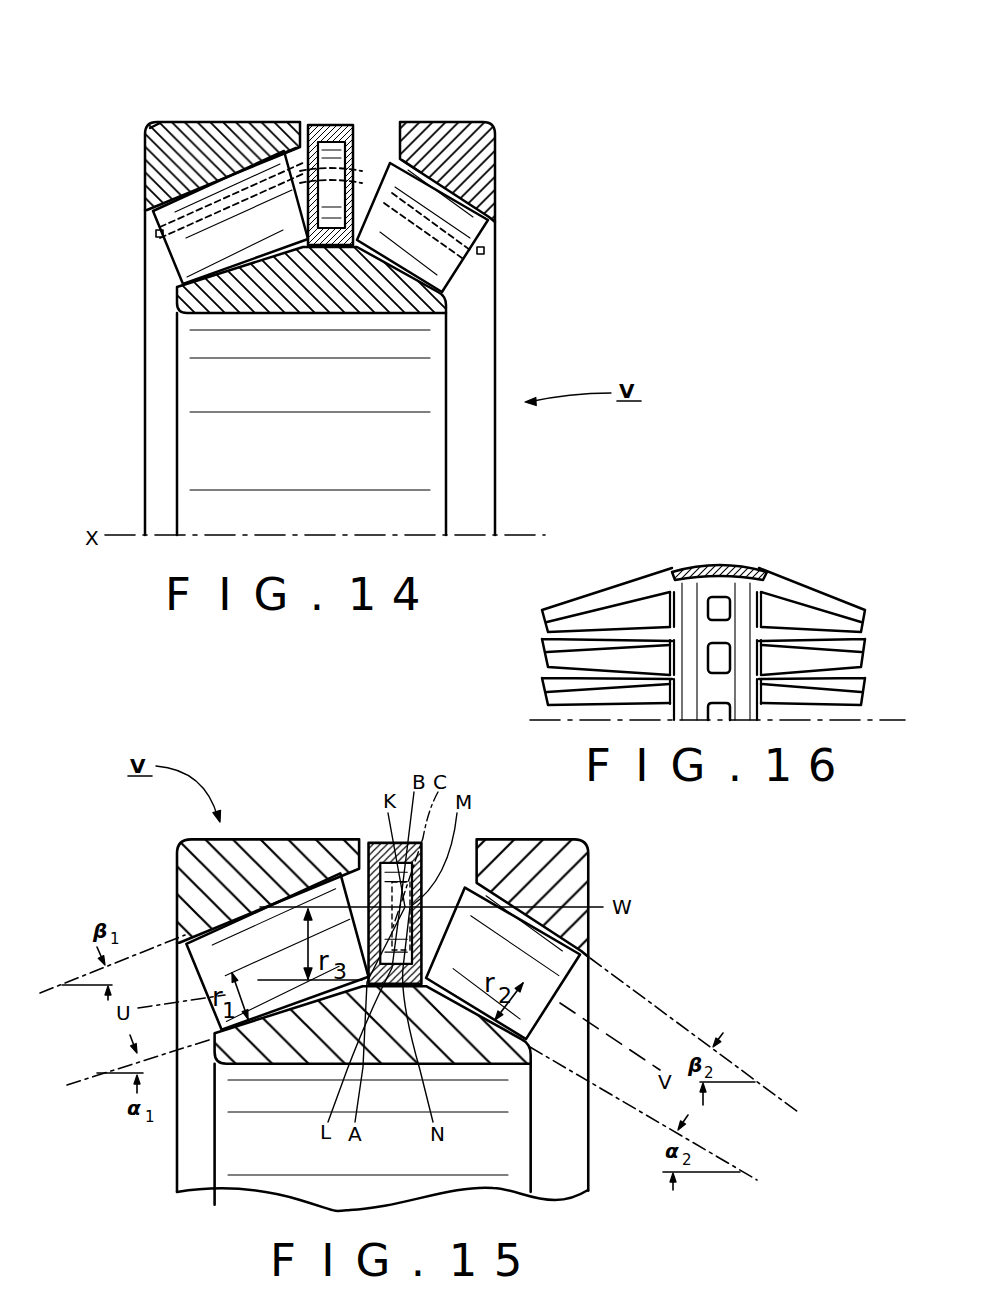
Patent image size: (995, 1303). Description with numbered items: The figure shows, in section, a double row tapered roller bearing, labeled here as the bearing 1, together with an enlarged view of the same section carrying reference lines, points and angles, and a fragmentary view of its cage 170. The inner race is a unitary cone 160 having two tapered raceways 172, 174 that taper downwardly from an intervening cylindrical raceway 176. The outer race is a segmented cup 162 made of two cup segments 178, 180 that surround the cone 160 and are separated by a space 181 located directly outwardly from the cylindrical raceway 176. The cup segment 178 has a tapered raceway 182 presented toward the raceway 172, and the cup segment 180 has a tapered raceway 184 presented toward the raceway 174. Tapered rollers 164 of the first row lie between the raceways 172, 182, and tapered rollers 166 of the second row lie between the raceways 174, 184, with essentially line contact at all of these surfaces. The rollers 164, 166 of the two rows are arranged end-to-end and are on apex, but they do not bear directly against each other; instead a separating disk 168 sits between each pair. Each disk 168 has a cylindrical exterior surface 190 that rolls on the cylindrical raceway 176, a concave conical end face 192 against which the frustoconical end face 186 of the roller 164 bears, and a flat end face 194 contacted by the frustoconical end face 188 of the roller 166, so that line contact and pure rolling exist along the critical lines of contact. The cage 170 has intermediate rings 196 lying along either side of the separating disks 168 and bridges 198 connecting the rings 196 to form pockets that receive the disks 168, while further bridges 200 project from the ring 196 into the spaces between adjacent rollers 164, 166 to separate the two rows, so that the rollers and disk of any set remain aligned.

In FIG. 14, the tapered roller bearing 1 is at (500, 184).
In FIG. 14, the unitary cone 160 is at (213, 320).
In FIG. 15, the unitary cone 160 is at (258, 1040).
In FIG. 14, the segmented cup 162 is at (192, 121).
In FIG. 15, the segmented cup 162 is at (320, 835).
In FIG. 14, the tapered rollers 164 is at (195, 244).
In FIG. 15, the tapered rollers 164 is at (207, 903).
In FIG. 14, the tapered rollers 166 is at (440, 251).
In FIG. 15, the tapered rollers 166 is at (568, 940).
In FIG. 14, the separating disks 168 is at (332, 118).
In FIG. 15, the separating disks 168 is at (368, 838).
In FIG. 14, the cage 170 is at (487, 253).
In FIG. 16, the cage 170 is at (520, 688).
In FIG. 14, the tapered raceway 172 is at (305, 224).
In FIG. 14, the tapered raceway 174 is at (390, 262).
In FIG. 14, the cylindrical raceway 176 is at (334, 248).
In FIG. 14, the cup segment 178 is at (165, 128).
In FIG. 14, the cup segment 180 is at (497, 130).
In FIG. 14, the space 181 is at (400, 112).
In FIG. 14, the tapered raceway 182 is at (155, 212).
In FIG. 14, the tapered raceway 184 is at (465, 229).
In FIG. 14, the frustoconical end face 186 is at (298, 250).
In FIG. 14, the frustoconical end face 188 is at (406, 250).
In FIG. 14, the cylindrical exterior surface 190 is at (308, 125).
In FIG. 14, the concave conical end face 192 is at (291, 140).
In FIG. 14, the flat end face 194 is at (385, 140).
In FIG. 16, the intermediate rings 196 is at (690, 607).
In FIG. 16, the bridges 198 is at (725, 632).
In FIG. 16, the bridges 200 is at (639, 582).